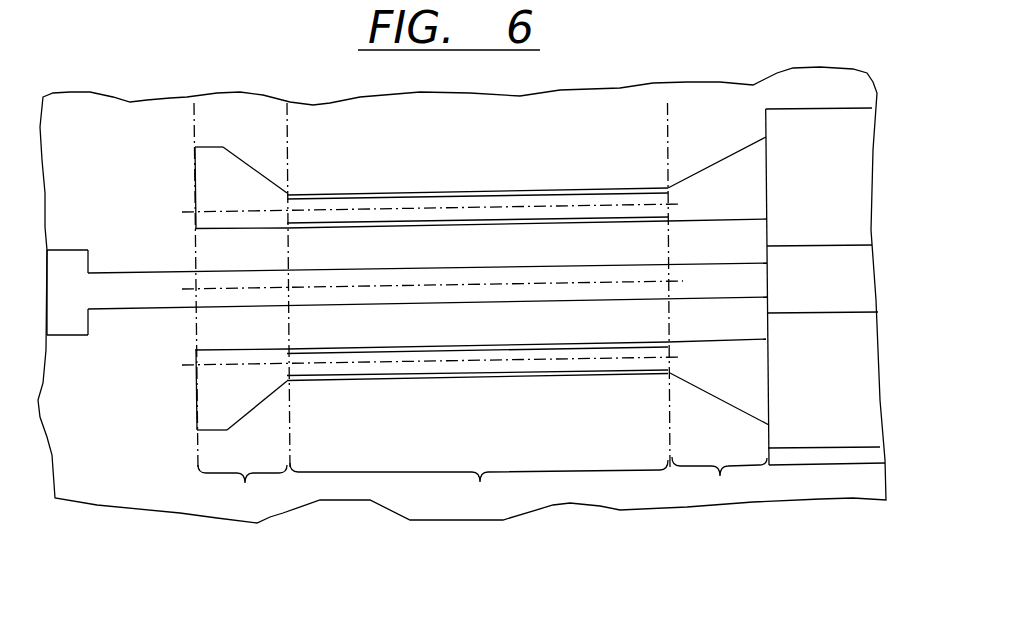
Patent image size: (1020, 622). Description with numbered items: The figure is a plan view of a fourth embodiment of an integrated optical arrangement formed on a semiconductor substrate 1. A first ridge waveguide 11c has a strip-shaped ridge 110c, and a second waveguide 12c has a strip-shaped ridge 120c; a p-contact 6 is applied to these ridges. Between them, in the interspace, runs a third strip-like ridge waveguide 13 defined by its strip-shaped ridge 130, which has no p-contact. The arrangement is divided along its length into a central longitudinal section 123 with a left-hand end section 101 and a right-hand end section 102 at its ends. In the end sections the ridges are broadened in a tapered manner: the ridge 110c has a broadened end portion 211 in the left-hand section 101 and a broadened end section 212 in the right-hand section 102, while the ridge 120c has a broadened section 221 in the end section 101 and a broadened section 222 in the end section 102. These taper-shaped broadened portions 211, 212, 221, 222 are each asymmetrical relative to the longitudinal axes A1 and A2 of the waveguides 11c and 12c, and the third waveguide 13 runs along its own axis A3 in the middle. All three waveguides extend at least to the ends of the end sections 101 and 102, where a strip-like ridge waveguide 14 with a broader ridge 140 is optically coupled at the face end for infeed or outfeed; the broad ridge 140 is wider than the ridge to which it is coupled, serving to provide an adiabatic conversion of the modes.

The substrate 1 is at (190, 515).
The p-contact 6 is at (453, 203).
The third strip-like ridge waveguide 13 is at (553, 260).
The strip-like ridge waveguide 14 is at (791, 101).
The first ridge waveguide 11c is at (527, 184).
The second waveguide 12c is at (543, 386).
The left-hand end section 101 is at (240, 311).
The right-hand end section 102 is at (718, 305).
The ridge 110c is at (203, 230).
The ridge 120c is at (212, 350).
The longitudinal section 123 is at (477, 309).
The strip-shaped ridge 130 is at (305, 270).
The strip-shaped ridge 140 is at (65, 249).
The broadened end portion 211 is at (200, 183).
The broadened end section 212 is at (730, 175).
The broadened section 221 is at (215, 405).
The broadened section 222 is at (730, 379).
The longitudinal axis A1 is at (348, 210).
The longitudinal axis A2 is at (378, 363).
The third optical axis A3 is at (413, 283).